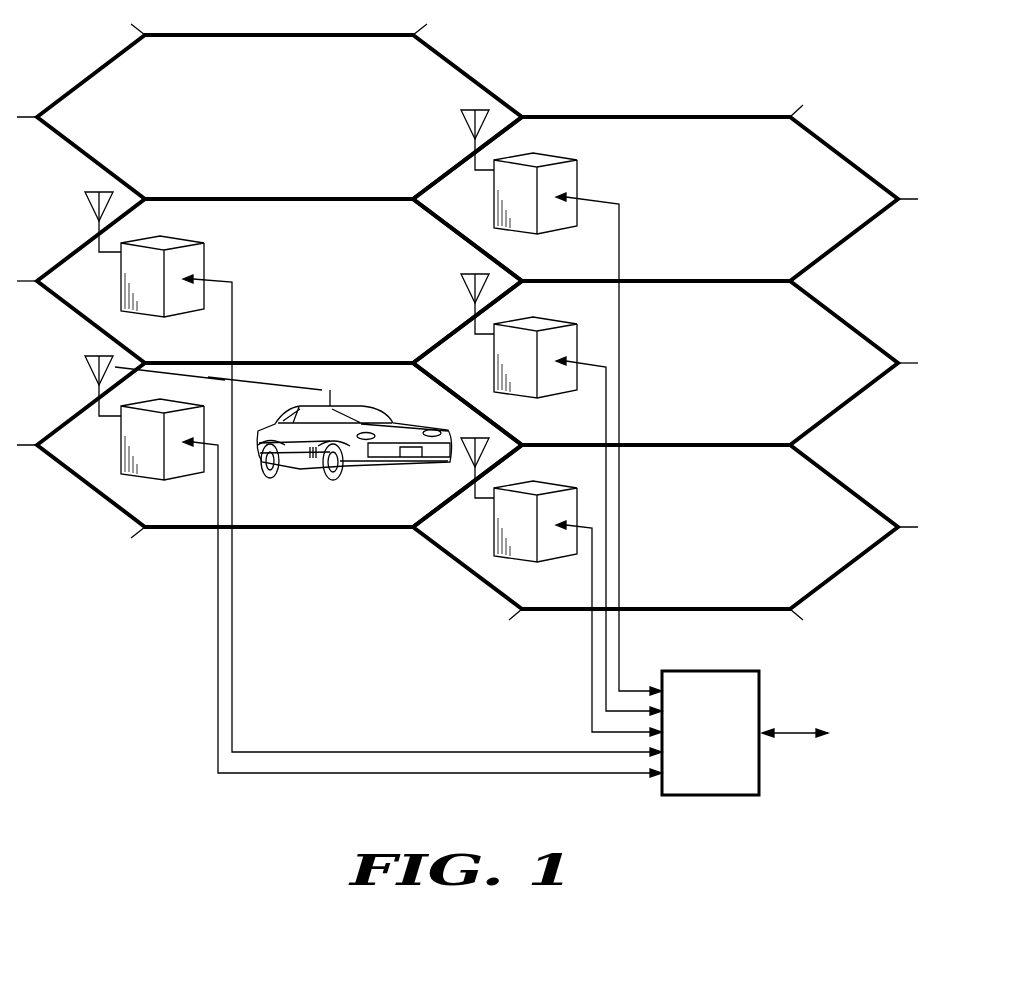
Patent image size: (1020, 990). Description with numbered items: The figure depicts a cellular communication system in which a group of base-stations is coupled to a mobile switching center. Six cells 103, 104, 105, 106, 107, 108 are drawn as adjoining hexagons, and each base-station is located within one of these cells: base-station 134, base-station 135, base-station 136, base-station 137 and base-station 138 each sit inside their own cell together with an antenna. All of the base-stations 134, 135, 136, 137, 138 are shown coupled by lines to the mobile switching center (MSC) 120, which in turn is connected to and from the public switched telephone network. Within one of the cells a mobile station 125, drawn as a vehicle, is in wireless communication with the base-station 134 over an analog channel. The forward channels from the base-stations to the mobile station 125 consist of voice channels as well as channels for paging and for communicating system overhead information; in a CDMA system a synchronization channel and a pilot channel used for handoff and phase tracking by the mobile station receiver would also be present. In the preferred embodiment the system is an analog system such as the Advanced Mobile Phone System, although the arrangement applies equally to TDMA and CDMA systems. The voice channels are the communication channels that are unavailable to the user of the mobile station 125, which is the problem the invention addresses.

The cell 103 is at (92, 487).
The cell 104 is at (92, 323).
The cell 105 is at (92, 159).
The cell 106 is at (846, 568).
The cell 107 is at (846, 404).
The cell 108 is at (846, 240).
The mobile switching center 120 is at (707, 670).
The mobile station 125 is at (401, 472).
The base-station 134 is at (183, 482).
The base-station 135 is at (183, 318).
The base-station 136 is at (557, 562).
The base-station 137 is at (557, 398).
The base-station 138 is at (557, 236).